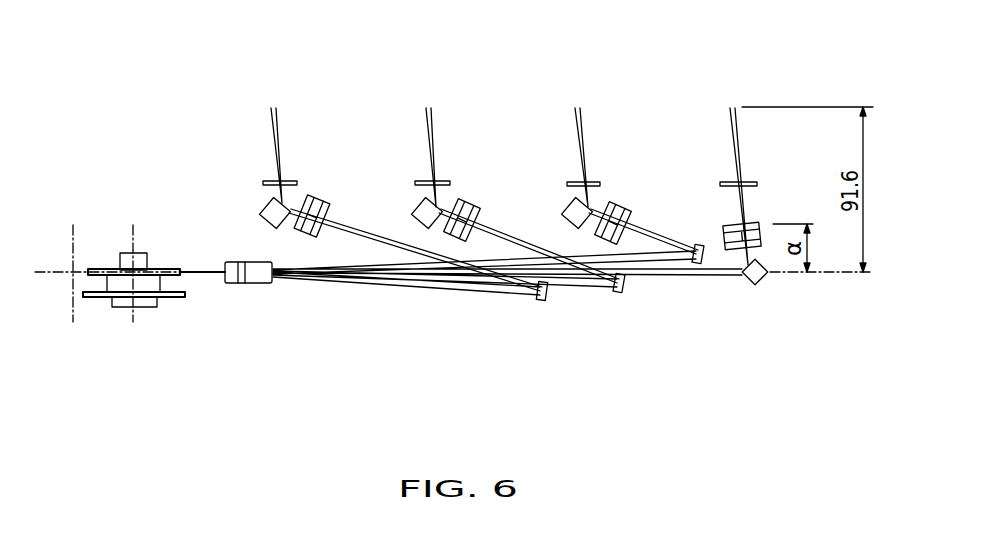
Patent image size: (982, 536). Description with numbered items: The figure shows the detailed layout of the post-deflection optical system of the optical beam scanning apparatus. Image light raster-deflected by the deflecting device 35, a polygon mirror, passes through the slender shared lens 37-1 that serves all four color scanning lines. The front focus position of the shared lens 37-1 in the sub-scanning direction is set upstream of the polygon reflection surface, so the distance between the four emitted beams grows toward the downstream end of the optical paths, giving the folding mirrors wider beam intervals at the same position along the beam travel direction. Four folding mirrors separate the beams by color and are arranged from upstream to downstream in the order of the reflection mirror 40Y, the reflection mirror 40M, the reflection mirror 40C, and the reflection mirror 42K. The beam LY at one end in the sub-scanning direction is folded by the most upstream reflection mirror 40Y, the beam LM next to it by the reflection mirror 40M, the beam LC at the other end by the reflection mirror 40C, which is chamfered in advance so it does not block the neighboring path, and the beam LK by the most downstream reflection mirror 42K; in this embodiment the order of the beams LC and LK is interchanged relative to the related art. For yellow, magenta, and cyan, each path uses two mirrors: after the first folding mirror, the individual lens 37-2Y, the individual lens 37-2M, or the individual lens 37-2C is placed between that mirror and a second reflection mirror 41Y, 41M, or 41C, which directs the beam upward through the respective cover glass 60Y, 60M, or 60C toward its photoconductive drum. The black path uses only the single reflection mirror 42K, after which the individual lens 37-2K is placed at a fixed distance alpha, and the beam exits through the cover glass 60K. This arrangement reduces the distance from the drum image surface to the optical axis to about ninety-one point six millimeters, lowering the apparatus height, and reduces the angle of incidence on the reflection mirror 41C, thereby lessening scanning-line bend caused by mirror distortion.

The deflecting device 35 is at (162, 253).
The shared lens 37-1 is at (250, 284).
The individual lens 37-2Y is at (312, 198).
The individual lens 37-2M is at (463, 200).
The individual lens 37-2C is at (617, 203).
The individual lens 37-2K is at (765, 228).
The reflection mirror 40Y is at (542, 300).
The reflection mirror 40M is at (618, 292).
The reflection mirror 40C is at (701, 266).
The reflection mirror 41Y is at (263, 207).
The reflection mirror 41M is at (415, 206).
The reflection mirror 41C is at (565, 206).
The reflection mirror 42K is at (765, 285).
The cover glass 60Y is at (270, 181).
The cover glass 60M is at (420, 181).
The cover glass 60C is at (573, 182).
The cover glass 60K is at (723, 182).
The beam LY is at (275, 142).
The beam LM is at (426, 144).
The beam LC is at (577, 144).
The beam LK is at (732, 173).